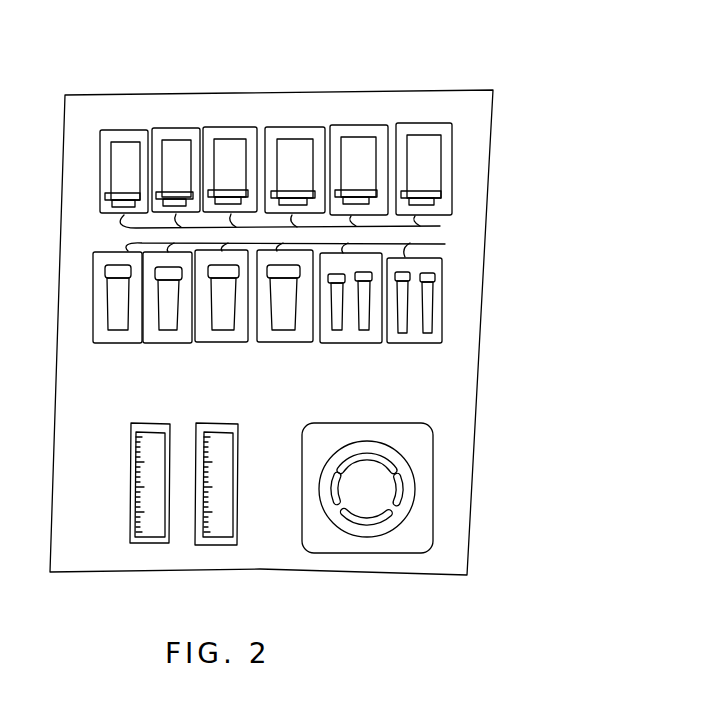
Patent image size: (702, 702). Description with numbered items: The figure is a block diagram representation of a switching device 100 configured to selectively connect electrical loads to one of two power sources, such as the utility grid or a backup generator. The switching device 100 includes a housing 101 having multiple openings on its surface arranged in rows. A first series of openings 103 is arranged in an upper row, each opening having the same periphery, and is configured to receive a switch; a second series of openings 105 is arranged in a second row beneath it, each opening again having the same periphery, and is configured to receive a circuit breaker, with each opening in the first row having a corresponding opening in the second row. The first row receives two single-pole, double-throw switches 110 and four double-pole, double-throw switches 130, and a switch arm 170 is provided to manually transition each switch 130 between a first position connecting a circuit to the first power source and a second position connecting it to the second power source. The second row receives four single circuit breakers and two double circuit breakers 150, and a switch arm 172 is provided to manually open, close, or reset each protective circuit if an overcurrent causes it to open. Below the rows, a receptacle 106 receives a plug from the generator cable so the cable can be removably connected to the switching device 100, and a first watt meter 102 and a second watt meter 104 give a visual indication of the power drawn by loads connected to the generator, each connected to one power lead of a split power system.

The switching device 100 is at (311, 318).
The housing 101 is at (499, 119).
The first watt meter 102 is at (124, 480).
The first series of openings 103 is at (299, 226).
The second watt meter 104 is at (238, 490).
The second series of openings 105 is at (301, 247).
The receptacle 106 is at (433, 490).
The single-pole, double throw switch 110 is at (122, 130).
The double-pole, double-throw switch 130 is at (380, 128).
The double circuit breaker 150 is at (427, 325).
The switch arm 170 is at (373, 193).
The switch arm 172 is at (410, 297).